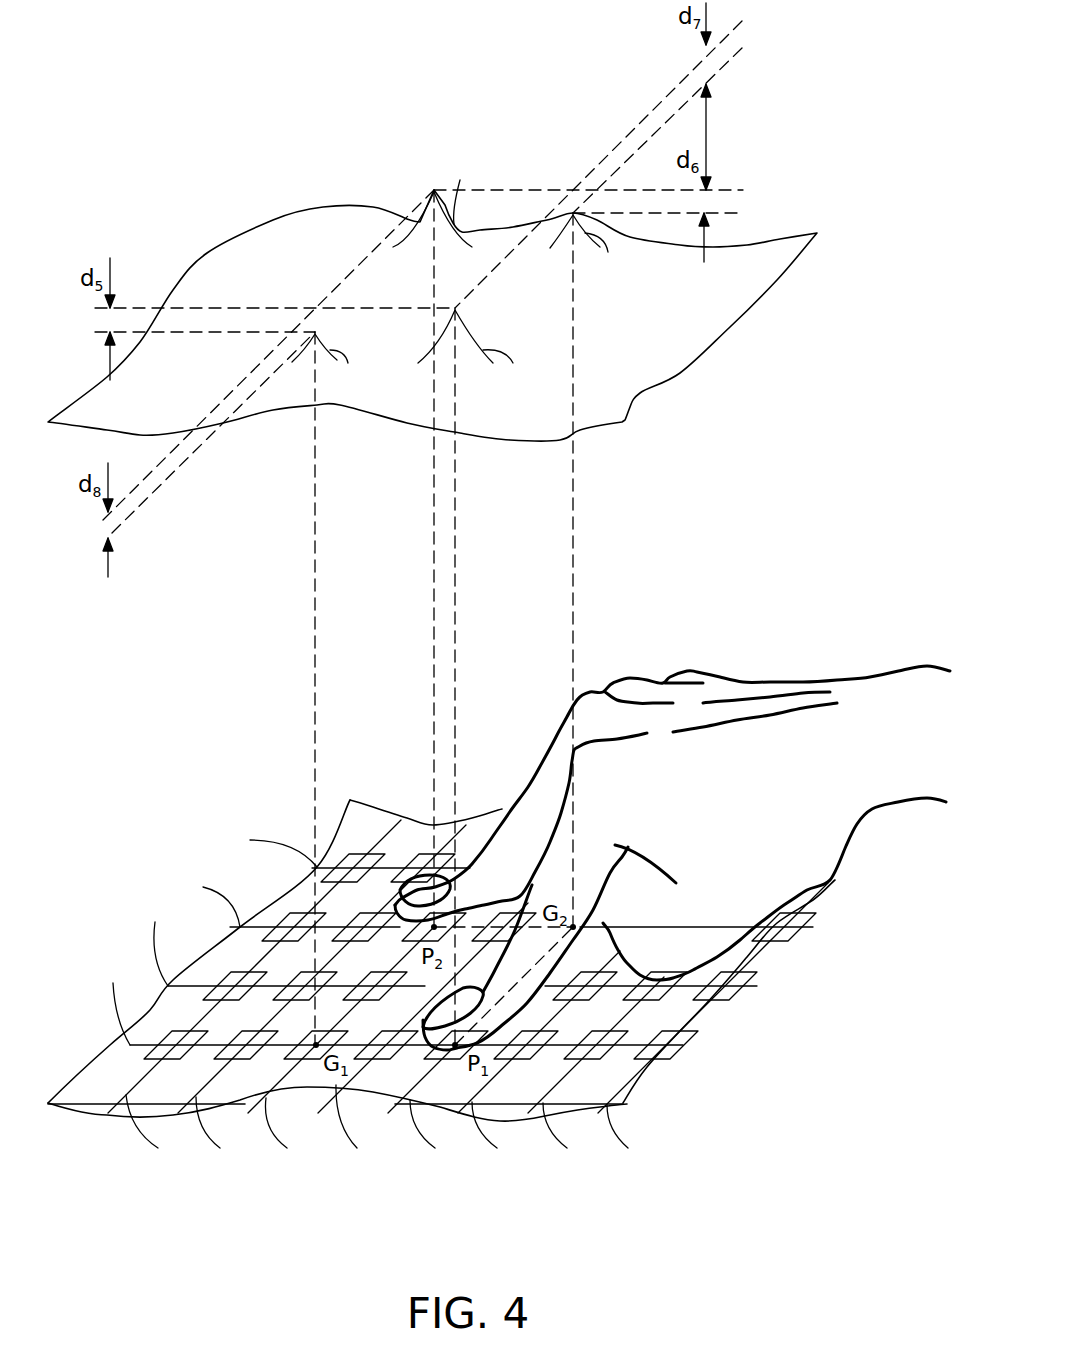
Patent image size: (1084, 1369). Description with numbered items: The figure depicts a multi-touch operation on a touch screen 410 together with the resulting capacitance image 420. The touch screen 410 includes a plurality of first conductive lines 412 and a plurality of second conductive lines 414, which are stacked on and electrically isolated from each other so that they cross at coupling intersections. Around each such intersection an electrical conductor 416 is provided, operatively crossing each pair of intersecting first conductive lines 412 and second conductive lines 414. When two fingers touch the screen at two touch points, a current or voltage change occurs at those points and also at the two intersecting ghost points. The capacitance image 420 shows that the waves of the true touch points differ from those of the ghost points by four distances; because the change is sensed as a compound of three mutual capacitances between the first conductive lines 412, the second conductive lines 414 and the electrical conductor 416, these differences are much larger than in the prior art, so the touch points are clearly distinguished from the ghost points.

The touch screen 410 is at (763, 965).
The first conductive lines 412 is at (123, 1020).
The second conductive lines 414 is at (650, 1170).
The electrical conductor 416 is at (663, 1053).
The capacitance image 420 is at (763, 283).